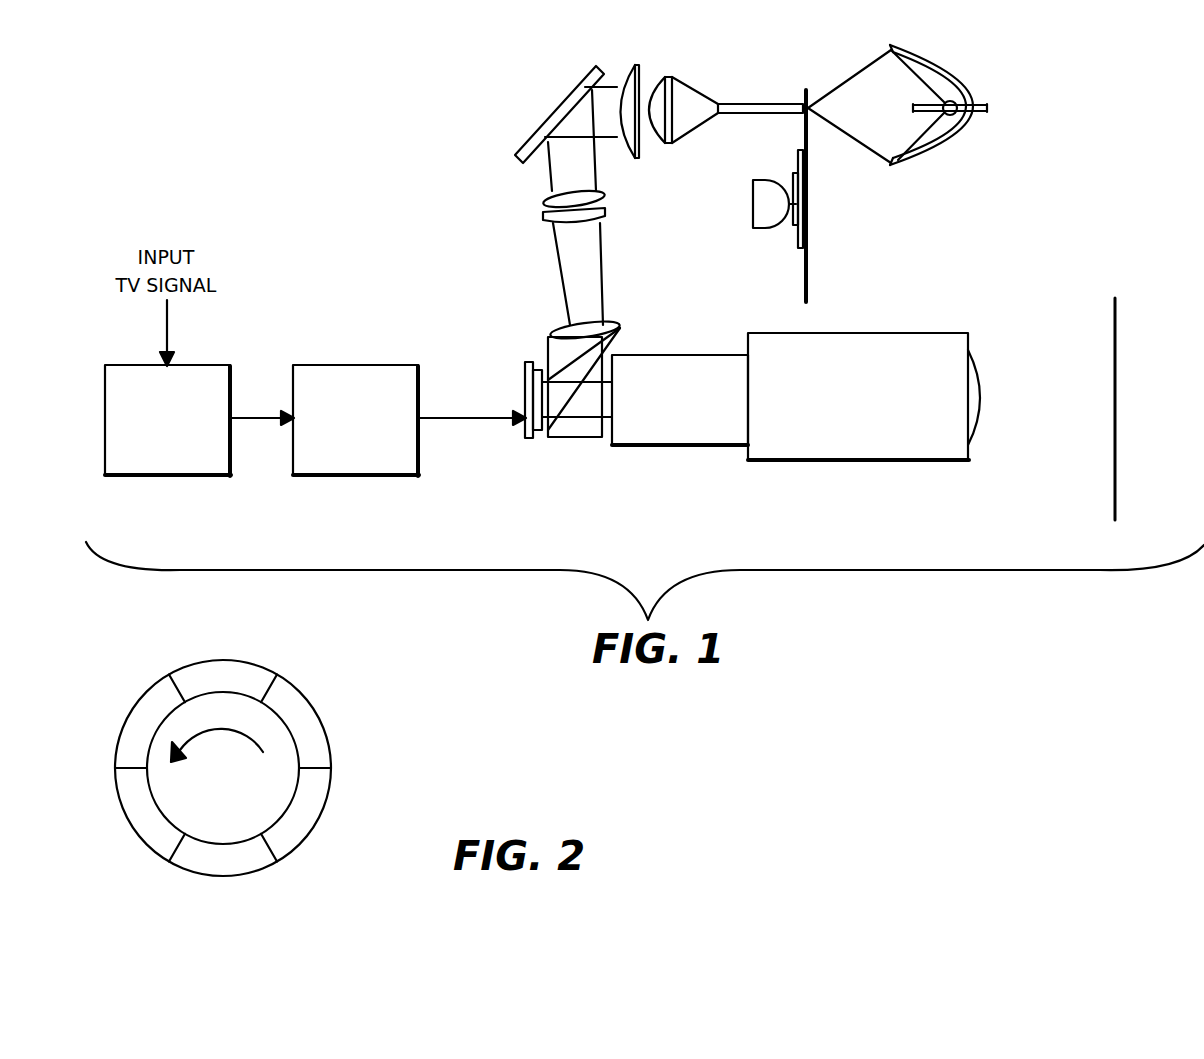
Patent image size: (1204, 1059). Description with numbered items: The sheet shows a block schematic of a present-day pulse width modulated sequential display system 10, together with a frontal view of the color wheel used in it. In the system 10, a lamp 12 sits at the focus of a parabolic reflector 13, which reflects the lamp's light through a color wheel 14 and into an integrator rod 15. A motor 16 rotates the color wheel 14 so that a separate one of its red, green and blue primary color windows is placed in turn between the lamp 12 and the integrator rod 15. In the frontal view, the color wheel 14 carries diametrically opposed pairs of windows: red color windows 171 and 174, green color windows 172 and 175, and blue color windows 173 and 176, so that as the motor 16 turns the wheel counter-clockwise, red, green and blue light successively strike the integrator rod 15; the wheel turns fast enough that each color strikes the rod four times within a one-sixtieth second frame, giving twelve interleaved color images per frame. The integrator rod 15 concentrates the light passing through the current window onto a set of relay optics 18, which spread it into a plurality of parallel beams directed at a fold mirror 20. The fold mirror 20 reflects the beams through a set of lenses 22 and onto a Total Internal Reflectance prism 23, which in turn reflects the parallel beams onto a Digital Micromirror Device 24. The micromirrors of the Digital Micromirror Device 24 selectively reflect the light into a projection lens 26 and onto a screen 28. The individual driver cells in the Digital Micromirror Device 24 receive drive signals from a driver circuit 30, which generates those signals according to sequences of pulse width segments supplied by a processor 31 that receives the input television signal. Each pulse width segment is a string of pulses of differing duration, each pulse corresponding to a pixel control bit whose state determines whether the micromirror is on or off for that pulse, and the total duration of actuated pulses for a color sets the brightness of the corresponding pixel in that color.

In FIG. 1, the pulse width modulated sequential display system 10 is at (659, 552).
In FIG. 1, the lamp 12 is at (953, 116).
In FIG. 1, the parabolic reflector 13 is at (929, 161).
In FIG. 1, the color wheel 14 is at (802, 287).
In FIG. 2, the color wheel 14 is at (518, 807).
In FIG. 1, the integrator rod 15 is at (765, 104).
In FIG. 1, the motor 16 is at (753, 208).
In FIG. 1, the relay optics 18 is at (688, 155).
In FIG. 1, the fold mirror 20 is at (528, 135).
In FIG. 1, the set of lenses 22 is at (537, 190).
In FIG. 1, the Total Internal Reflectance prism 23 is at (580, 440).
In FIG. 1, the Digital Micromirror Device 24 is at (527, 372).
In FIG. 1, the projection lens 26 is at (766, 462).
In FIG. 1, the screen 28 is at (1115, 488).
In FIG. 1, the driver circuit 30 is at (335, 478).
In FIG. 1, the processor 31 is at (163, 478).
In FIG. 2, the red color window 171 is at (256, 660).
In FIG. 2, the green color window 172 is at (312, 700).
In FIG. 2, the blue color window 173 is at (330, 787).
In FIG. 2, the red color window 174 is at (252, 868).
In FIG. 2, the green color window 175 is at (136, 832).
In FIG. 2, the blue color window 176 is at (128, 712).